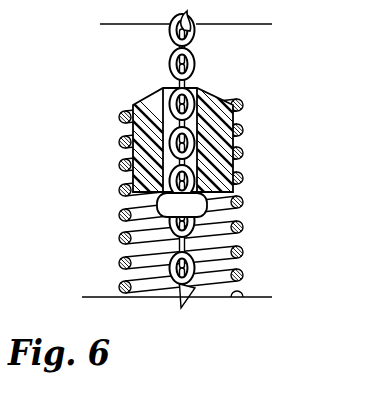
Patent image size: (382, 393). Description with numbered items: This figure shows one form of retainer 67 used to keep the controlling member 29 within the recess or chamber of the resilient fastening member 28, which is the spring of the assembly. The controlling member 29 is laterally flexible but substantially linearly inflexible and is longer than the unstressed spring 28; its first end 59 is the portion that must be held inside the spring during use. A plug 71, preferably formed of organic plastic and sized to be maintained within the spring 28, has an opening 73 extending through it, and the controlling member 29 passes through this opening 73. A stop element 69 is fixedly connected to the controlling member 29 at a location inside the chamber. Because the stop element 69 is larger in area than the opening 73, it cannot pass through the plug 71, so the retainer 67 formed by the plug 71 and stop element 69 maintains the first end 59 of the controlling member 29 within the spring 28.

The resilient fastening member 28 is at (246, 172).
The controlling member 29 is at (170, 64).
The first end 59 is at (163, 246).
The retainer 67 is at (253, 87).
The stop element 69 is at (192, 205).
The plug 71 is at (132, 100).
The opening 73 is at (114, 140).